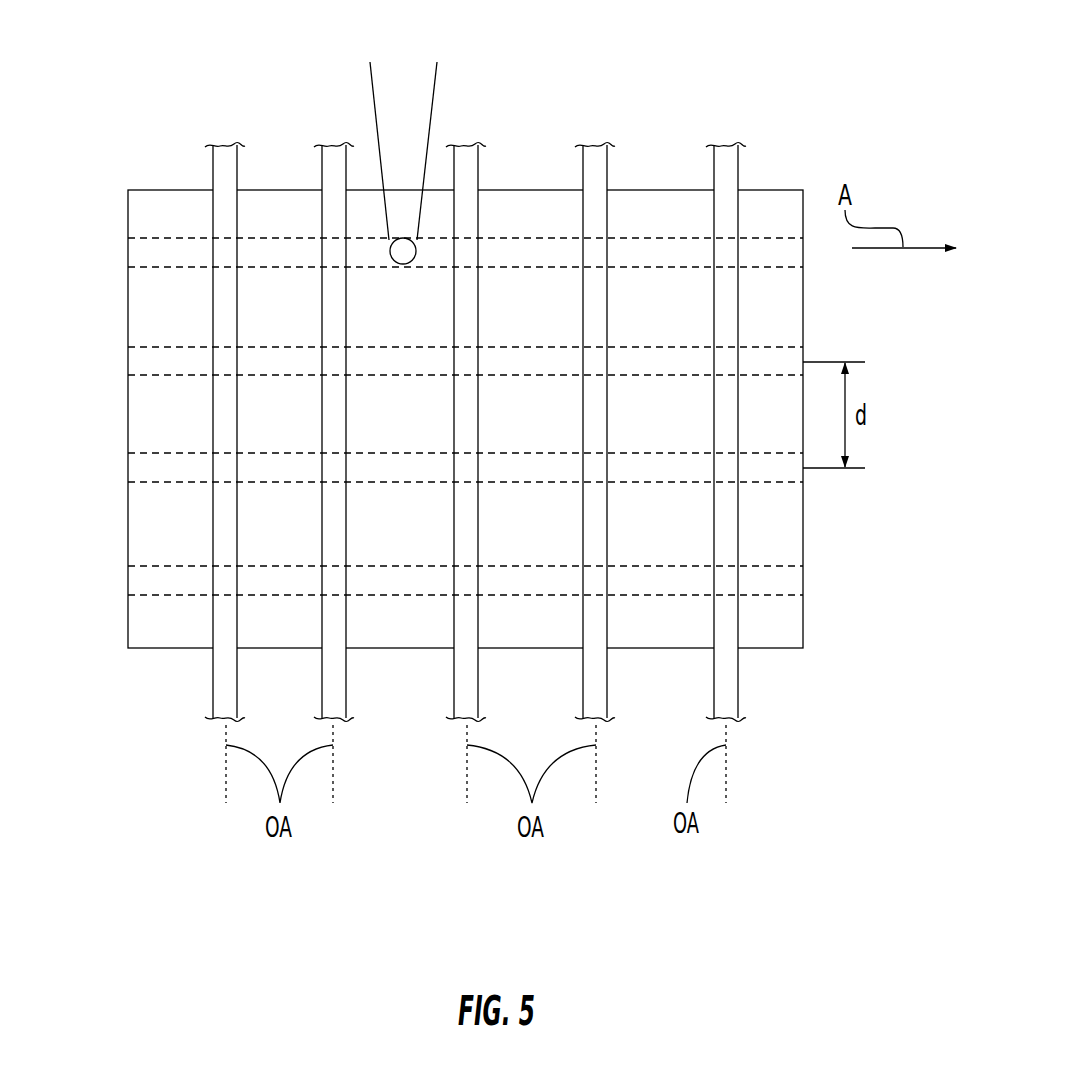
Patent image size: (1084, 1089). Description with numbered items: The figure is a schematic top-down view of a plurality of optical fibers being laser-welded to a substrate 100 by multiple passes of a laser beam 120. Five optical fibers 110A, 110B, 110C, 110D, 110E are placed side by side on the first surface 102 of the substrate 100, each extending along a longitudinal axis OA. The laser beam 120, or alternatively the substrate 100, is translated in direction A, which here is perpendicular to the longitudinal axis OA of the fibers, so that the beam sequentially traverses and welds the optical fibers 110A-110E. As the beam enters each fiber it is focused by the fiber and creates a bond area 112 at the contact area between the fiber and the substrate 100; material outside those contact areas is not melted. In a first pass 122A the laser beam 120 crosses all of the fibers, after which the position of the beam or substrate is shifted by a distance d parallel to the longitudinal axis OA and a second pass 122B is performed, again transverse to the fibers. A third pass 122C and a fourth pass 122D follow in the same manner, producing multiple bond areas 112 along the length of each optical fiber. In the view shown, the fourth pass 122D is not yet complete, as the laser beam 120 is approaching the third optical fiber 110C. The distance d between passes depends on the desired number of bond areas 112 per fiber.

The substrate 100 is at (88, 731).
The first surface 102 is at (679, 282).
The optical fiber 110A is at (227, 143).
The optical fiber 110B is at (339, 143).
The optical fiber 110C is at (466, 143).
The optical fiber 110D is at (595, 143).
The optical fiber 110E is at (723, 143).
The bond area 112 is at (322, 270).
The laser beam 120 is at (366, 86).
The first pass 122A is at (158, 565).
The second pass 122B is at (158, 452).
The third pass 122C is at (158, 346).
The fourth pass 122D is at (158, 236).